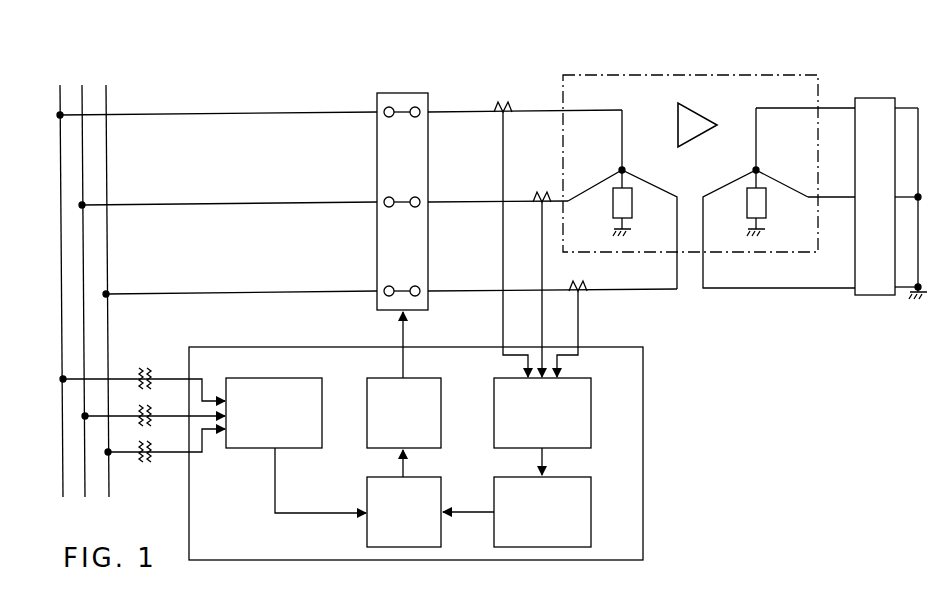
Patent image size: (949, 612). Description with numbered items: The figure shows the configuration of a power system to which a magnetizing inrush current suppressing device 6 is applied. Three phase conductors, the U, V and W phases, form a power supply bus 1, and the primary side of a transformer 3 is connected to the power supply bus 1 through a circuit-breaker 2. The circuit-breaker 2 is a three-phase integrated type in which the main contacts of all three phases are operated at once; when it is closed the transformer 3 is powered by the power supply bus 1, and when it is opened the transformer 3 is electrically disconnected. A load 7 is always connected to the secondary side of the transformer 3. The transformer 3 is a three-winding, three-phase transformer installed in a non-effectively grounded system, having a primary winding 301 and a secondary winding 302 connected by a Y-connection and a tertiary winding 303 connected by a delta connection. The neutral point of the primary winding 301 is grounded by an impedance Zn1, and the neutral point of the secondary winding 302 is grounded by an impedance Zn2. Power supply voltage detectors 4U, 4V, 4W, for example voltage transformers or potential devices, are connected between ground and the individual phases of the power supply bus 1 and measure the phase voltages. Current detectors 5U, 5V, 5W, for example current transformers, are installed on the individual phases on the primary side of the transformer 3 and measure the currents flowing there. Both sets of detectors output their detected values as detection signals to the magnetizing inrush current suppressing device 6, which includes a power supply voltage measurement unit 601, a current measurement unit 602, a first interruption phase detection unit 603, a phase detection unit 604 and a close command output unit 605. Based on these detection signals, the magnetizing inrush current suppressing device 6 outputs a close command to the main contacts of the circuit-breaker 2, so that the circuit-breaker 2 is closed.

The power supply bus 1 is at (102, 40).
The circuit-breaker 2 is at (403, 92).
The transformer 3 is at (743, 67).
The load 7 is at (873, 98).
The current detector 5U is at (501, 99).
The current detector 5V is at (539, 188).
The current detector 5W is at (580, 282).
The power supply voltage detector 4U is at (139, 370).
The power supply voltage detector 4V is at (151, 409).
The power supply voltage detector 4W is at (151, 445).
The primary winding 301 is at (622, 199).
The secondary winding 302 is at (779, 198).
The tertiary winding 303 is at (677, 126).
The impedance Zn1 is at (632, 205).
The impedance Zn2 is at (766, 205).
The magnetizing inrush current suppressing device 6 is at (645, 408).
The power supply voltage measurement unit 601 is at (246, 450).
The current measurement unit 602 is at (591, 408).
The first interruption phase detection unit 603 is at (591, 493).
The phase detection unit 604 is at (441, 483).
The close command output unit 605 is at (441, 400).